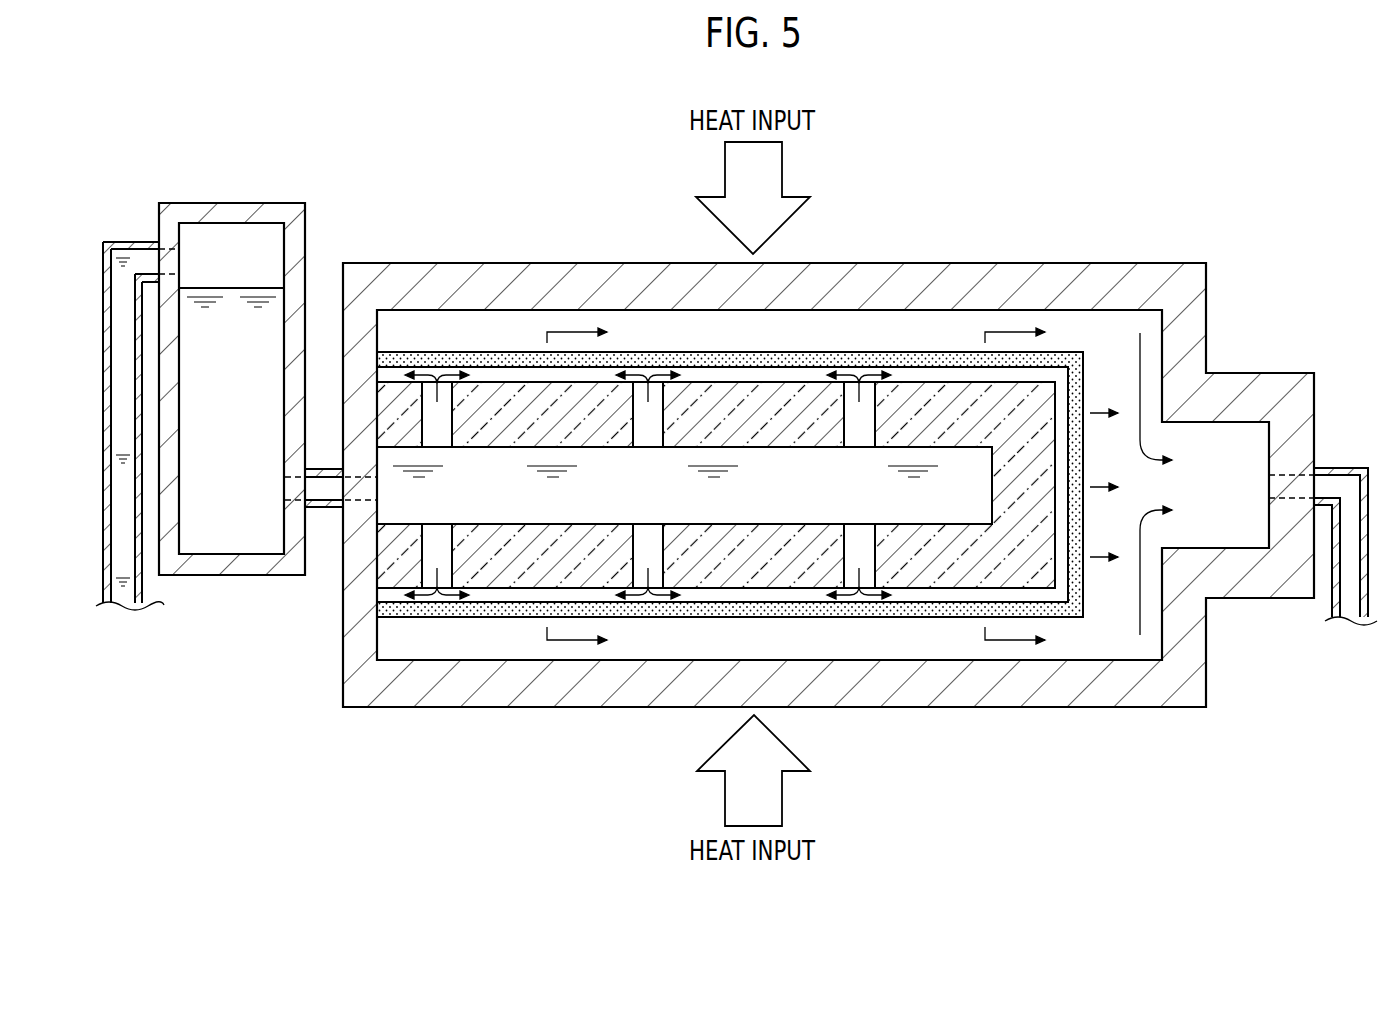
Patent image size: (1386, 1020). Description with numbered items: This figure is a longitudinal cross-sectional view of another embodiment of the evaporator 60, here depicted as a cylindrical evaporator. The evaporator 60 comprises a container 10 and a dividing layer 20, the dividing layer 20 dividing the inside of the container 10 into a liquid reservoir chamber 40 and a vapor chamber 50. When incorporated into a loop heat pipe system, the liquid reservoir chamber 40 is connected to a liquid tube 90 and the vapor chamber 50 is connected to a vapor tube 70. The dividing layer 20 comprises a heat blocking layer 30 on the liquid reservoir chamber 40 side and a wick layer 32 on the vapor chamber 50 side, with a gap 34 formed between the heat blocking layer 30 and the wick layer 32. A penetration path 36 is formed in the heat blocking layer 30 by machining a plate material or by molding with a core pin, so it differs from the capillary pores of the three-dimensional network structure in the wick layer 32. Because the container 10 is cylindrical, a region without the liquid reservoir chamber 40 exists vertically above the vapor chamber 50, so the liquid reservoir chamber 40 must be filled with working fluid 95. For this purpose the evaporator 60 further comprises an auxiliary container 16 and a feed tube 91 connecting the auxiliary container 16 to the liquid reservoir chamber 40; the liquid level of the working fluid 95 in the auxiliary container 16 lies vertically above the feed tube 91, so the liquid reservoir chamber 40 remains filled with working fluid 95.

The container 10 is at (991, 272).
The auxiliary container 16 is at (304, 205).
The dividing layer 20 is at (730, 577).
The heat blocking layer 30 is at (488, 575).
The wick layer 32 is at (522, 610).
The gap 34 is at (505, 595).
The penetration path 36 is at (449, 438).
The liquid reservoir chamber 40 is at (767, 499).
The vapor chamber 50 is at (767, 343).
The evaporator 60 is at (1206, 264).
The vapor tube 70 is at (1345, 490).
The liquid tube 90 is at (123, 556).
The feed tube 91 is at (326, 490).
The working fluid 95 is at (265, 339).